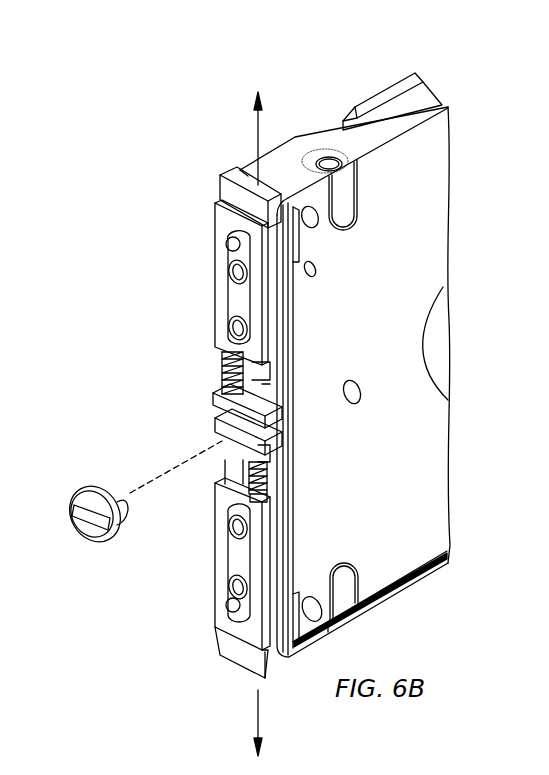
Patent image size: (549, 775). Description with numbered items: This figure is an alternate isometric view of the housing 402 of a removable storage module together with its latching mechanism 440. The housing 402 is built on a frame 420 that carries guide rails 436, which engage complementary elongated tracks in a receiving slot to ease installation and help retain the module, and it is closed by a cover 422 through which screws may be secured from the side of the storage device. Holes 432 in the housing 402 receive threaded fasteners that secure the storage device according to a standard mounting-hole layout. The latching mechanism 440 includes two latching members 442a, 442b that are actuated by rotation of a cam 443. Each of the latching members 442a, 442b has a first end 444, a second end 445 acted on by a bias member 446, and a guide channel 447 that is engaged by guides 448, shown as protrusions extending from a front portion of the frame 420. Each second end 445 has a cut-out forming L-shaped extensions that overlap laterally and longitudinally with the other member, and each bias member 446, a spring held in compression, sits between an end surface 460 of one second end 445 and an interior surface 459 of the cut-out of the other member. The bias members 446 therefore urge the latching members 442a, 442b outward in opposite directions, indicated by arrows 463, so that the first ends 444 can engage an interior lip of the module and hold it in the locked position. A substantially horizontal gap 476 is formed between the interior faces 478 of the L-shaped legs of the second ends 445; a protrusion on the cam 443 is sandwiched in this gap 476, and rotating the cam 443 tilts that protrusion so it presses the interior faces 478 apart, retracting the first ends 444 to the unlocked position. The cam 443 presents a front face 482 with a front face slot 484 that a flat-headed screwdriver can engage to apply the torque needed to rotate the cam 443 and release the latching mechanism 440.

The housing 402 is at (425, 50).
The frame 420 is at (423, 106).
The cover 422 is at (445, 217).
The holes 432 is at (323, 148).
The guide rails 436 is at (392, 96).
The latching mechanism 440 is at (182, 197).
The latching member 442a is at (213, 254).
The latching member 442b is at (230, 608).
The cam 443 is at (94, 486).
The first end 444 is at (223, 172).
The second end 445 is at (216, 397).
The bias member 446 is at (220, 373).
The guide channel 447 is at (230, 240).
The guides 448 is at (227, 272).
The interior surface 459 is at (280, 372).
The end surface 460 is at (280, 407).
The arrows 463 is at (253, 113).
The gap 476 is at (215, 412).
The interior faces 478 is at (282, 437).
The front face 482 is at (72, 489).
The front face slot 484 is at (88, 522).